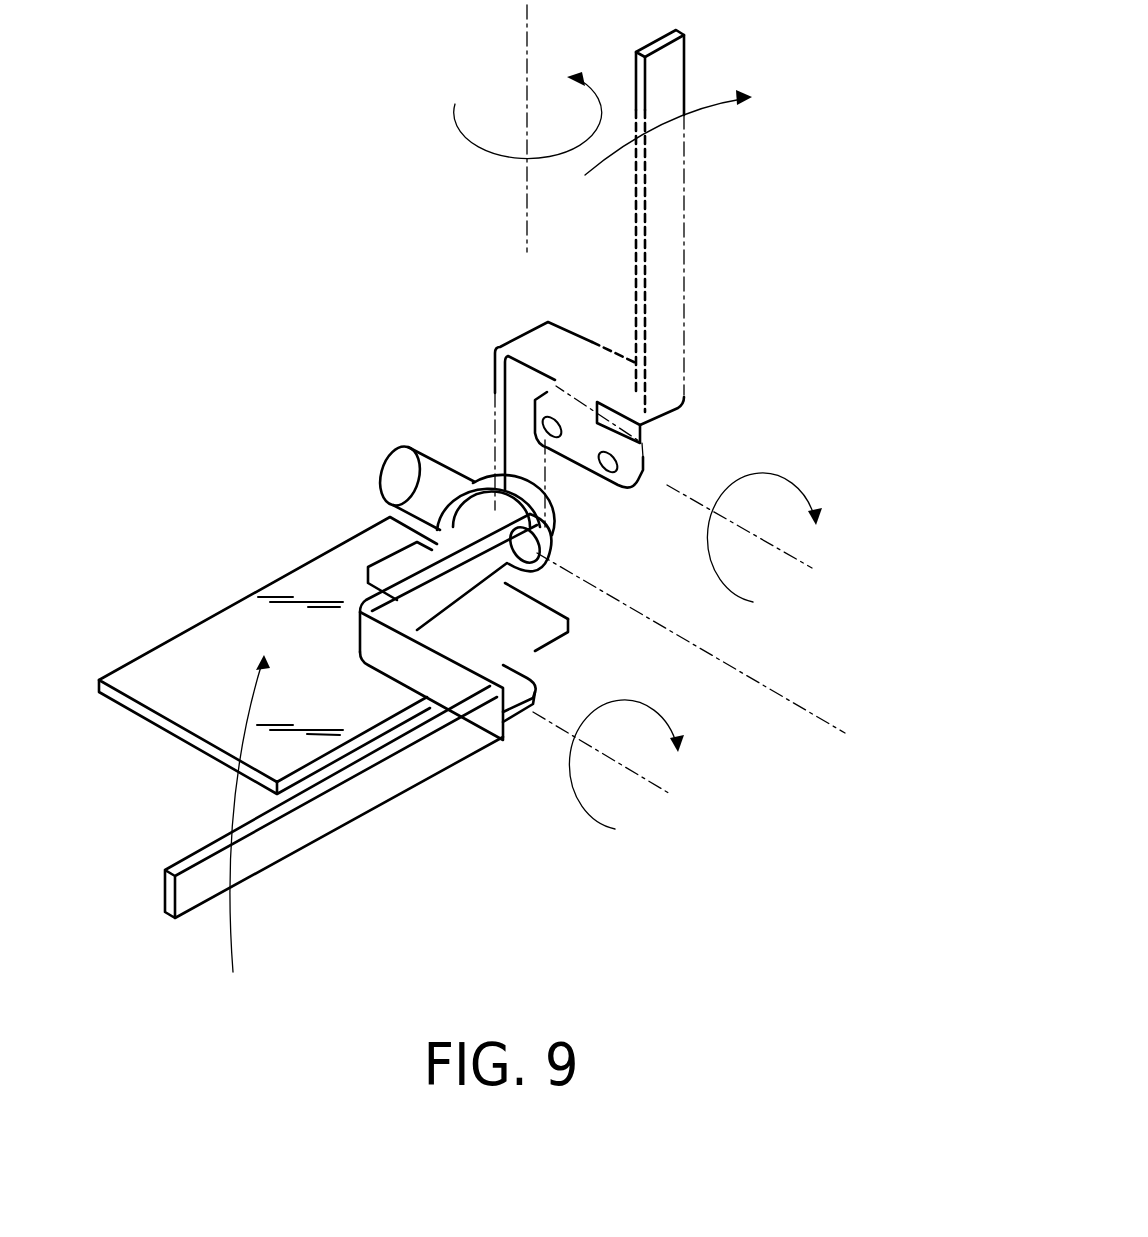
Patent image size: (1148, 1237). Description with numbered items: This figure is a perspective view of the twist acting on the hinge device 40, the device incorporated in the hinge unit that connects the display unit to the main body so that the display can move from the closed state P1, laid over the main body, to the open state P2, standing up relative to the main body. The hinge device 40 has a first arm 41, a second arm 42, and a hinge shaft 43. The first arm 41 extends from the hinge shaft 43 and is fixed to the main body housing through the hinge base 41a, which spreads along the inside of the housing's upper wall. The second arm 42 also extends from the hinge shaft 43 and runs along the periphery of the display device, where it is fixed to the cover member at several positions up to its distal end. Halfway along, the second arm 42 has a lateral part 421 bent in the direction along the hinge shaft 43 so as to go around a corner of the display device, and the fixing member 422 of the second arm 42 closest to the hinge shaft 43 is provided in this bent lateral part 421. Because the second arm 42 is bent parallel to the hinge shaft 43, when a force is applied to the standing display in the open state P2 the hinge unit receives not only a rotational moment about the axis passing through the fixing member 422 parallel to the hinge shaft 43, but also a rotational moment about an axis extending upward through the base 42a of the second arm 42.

The hinge device 40 is at (878, 170).
The first arm 41 is at (400, 553).
The hinge base 41a is at (193, 653).
The second arm 42 is at (667, 262).
The base of the second arm 42a is at (520, 455).
The hinge shaft 43 is at (400, 467).
The lateral part 421 is at (585, 348).
The fixing member 422 is at (575, 468).
The closed state P1 is at (350, 857).
The open state P2 is at (728, 172).